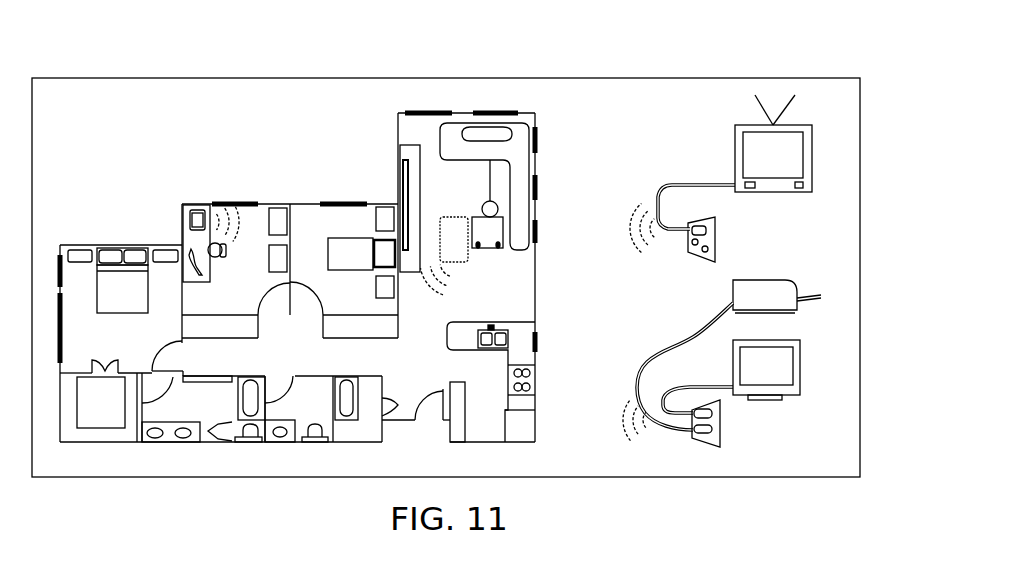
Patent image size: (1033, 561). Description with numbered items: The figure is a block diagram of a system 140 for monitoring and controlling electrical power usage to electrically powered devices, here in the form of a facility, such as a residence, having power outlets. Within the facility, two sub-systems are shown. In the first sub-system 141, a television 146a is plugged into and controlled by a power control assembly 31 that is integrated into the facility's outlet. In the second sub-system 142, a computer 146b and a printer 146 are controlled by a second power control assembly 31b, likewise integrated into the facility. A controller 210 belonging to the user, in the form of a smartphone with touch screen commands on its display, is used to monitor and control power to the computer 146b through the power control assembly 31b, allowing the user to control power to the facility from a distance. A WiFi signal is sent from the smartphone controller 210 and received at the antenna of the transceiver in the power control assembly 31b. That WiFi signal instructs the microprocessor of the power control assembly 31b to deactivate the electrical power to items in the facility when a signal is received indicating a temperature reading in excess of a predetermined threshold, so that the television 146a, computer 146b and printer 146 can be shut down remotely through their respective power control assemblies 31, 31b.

The system 140 is at (81, 55).
The sub-system 141 is at (679, 124).
The sub-system 142 is at (664, 321).
The printer 146 is at (183, 211).
The television 146a is at (796, 125).
The computer 146b is at (794, 340).
The power control assembly 31 is at (192, 207).
The power control assembly 31b is at (722, 422).
The controller 210 is at (460, 277).